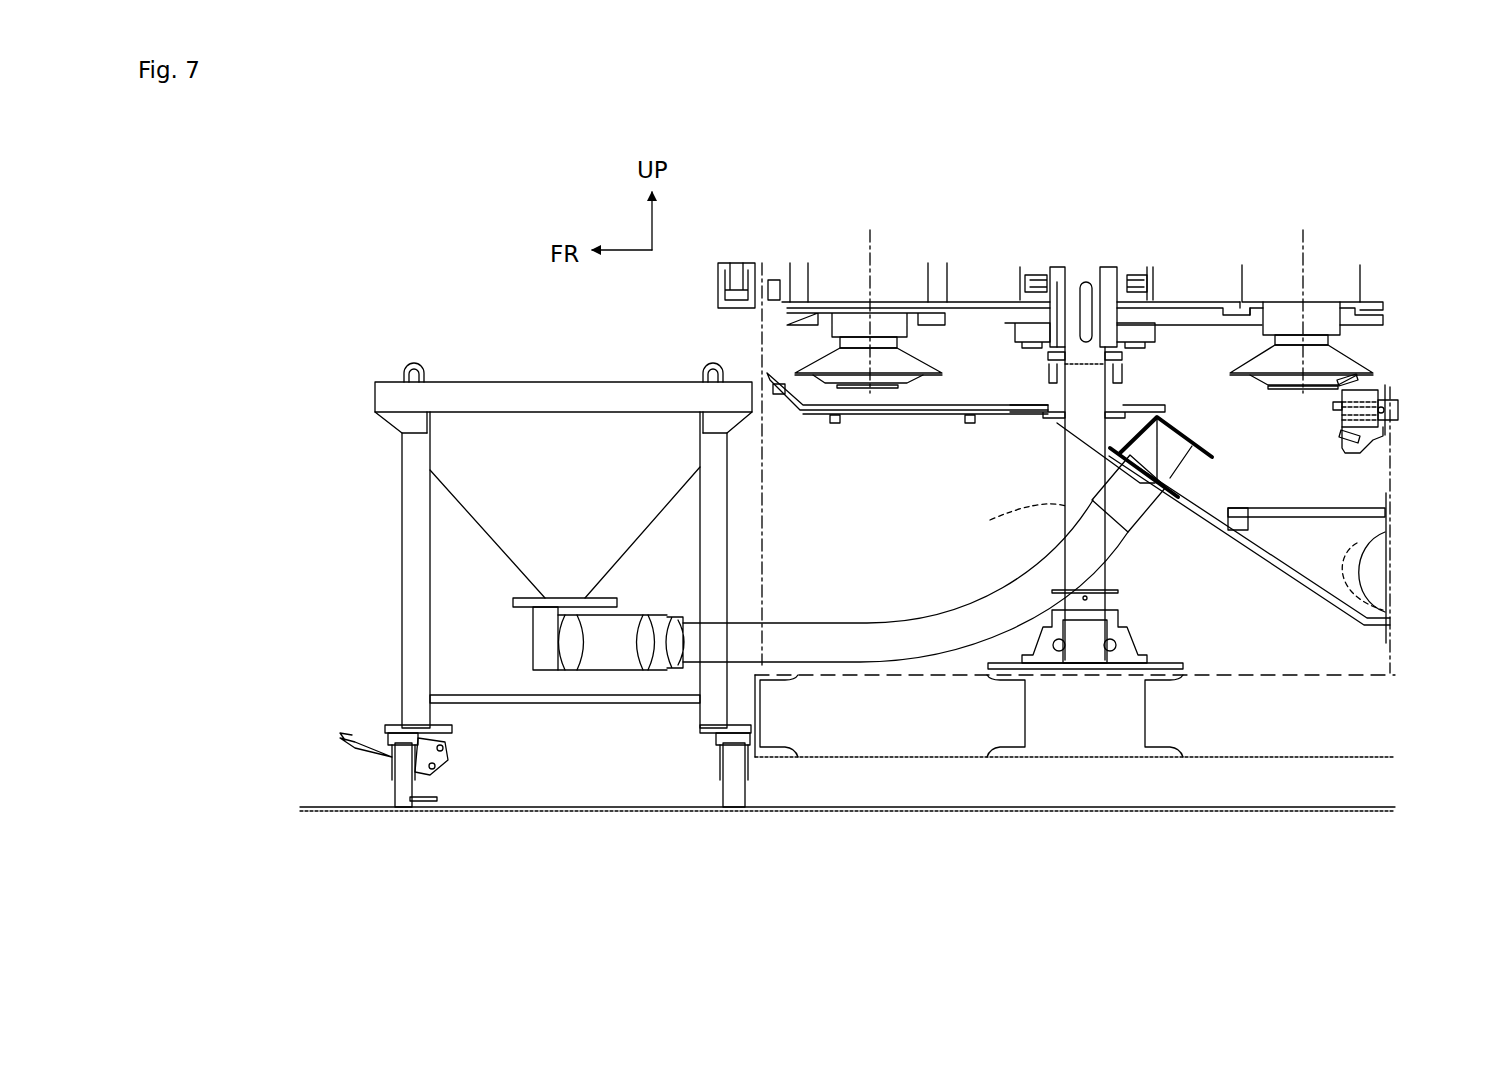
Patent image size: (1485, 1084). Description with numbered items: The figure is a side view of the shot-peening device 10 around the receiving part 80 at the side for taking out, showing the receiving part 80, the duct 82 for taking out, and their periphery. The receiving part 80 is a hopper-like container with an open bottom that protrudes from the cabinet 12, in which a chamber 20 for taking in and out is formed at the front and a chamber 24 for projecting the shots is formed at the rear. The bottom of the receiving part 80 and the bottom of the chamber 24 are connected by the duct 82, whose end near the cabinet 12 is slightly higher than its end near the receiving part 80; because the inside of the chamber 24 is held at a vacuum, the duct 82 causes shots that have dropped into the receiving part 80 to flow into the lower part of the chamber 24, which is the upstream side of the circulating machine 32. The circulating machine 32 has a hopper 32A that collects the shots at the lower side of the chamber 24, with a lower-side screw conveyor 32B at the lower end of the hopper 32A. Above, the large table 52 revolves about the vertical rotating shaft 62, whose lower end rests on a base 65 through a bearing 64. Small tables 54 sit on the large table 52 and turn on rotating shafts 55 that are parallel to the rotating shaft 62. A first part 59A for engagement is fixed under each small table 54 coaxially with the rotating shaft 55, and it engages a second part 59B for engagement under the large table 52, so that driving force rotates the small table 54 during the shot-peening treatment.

The shot-peening device 10 is at (462, 265).
The cabinet 12 is at (1340, 632).
The chamber for taking in and out 20 is at (795, 242).
The chamber for projecting the shots 24 is at (1192, 263).
The circulating machine 32 is at (1300, 558).
The hopper 32A is at (1195, 507).
The lower-side screw conveyor 32B is at (1357, 543).
The large table 52 is at (1213, 300).
The small tables 54 is at (930, 285).
The rotating shafts 55 is at (878, 265).
The first part for engagement 59A is at (922, 386).
The second part for engagement 59B is at (1345, 452).
The rotating shaft 62 is at (1060, 506).
The bearing 64 is at (1130, 633).
The base 65 is at (1165, 663).
The receiving part at the side for taking out 80 is at (480, 527).
The duct for taking out 82 is at (883, 622).